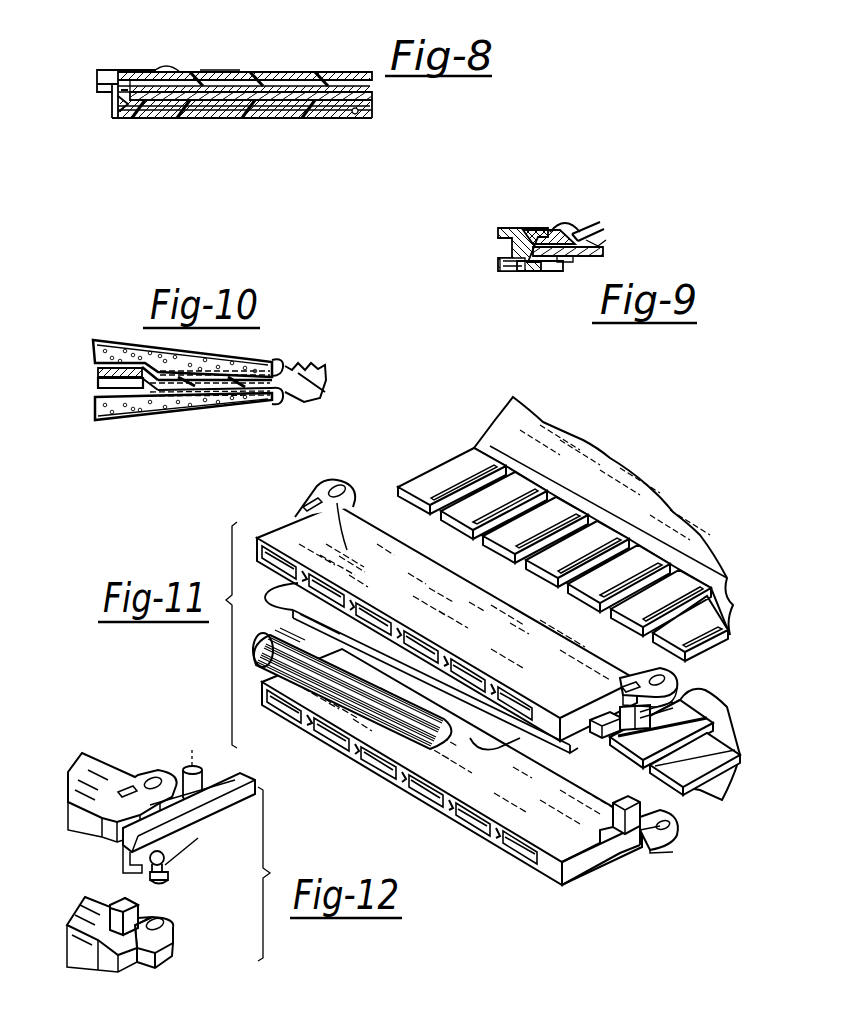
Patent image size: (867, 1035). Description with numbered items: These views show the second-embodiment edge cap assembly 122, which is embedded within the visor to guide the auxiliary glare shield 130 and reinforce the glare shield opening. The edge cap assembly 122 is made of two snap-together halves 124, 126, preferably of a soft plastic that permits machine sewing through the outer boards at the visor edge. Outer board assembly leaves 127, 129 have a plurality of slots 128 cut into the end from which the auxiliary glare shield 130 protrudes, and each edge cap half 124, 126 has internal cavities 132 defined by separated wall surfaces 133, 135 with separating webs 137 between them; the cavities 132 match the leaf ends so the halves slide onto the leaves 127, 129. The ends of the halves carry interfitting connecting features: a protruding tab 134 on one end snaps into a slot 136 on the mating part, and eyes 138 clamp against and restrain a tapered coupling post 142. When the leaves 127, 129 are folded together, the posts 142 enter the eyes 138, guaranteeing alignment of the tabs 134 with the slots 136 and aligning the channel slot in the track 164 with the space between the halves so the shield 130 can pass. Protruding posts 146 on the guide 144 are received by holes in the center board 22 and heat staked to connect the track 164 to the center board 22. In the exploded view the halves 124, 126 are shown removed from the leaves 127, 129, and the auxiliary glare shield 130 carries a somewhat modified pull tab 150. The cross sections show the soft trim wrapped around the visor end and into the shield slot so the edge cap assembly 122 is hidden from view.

In FIG. 9, the center board 22 is at (598, 225).
In FIG. 10, the center board 22 is at (98, 371).
In FIG. 11, the edge cap assembly 122 is at (230, 598).
In FIG. 8, the edge cap half 124 is at (282, 77).
In FIG. 9, the edge cap half 124 is at (537, 228).
In FIG. 10, the edge cap half 124 is at (270, 357).
In FIG. 11, the edge cap half 124 is at (294, 541).
In FIG. 8, the edge cap half 126 is at (323, 110).
In FIG. 9, the edge cap half 126 is at (548, 272).
In FIG. 10, the edge cap half 126 is at (260, 402).
In FIG. 11, the edge cap half 126 is at (310, 737).
In FIG. 8, the outer board assembly leaf 127 is at (333, 72).
In FIG. 10, the outer board assembly leaf 127 is at (93, 357).
In FIG. 11, the outer board assembly leaf 127 is at (510, 428).
In FIG. 11, the slots 128 is at (477, 480).
In FIG. 8, the outer board assembly leaf 129 is at (350, 110).
In FIG. 10, the outer board assembly leaf 129 is at (95, 400).
In FIG. 11, the outer board assembly leaf 129 is at (723, 783).
In FIG. 8, the auxiliary glare shield 130 is at (358, 97).
In FIG. 9, the auxiliary glare shield 130 is at (604, 251).
In FIG. 10, the auxiliary glare shield 130 is at (98, 383).
In FIG. 11, the auxiliary glare shield 130 is at (292, 593).
In FIG. 8, the internal cavities 132 is at (181, 112).
In FIG. 11, the internal cavities 132 is at (278, 574).
In FIG. 8, the wall surface 133 is at (238, 70).
In FIG. 11, the wall surface 133 is at (343, 480).
In FIG. 8, the protruding tab 134 is at (112, 100).
In FIG. 12, the protruding tab 134 is at (117, 832).
In FIG. 8, the wall surface 135 is at (262, 103).
In FIG. 11, the wall surface 135 is at (492, 696).
In FIG. 8, the slot 136 is at (120, 113).
In FIG. 12, the slot 136 is at (135, 905).
In FIG. 11, the separating webs 137 is at (392, 626).
In FIG. 9, the eyes 138 is at (520, 228).
In FIG. 12, the eyes 138 is at (150, 777).
In FIG. 9, the tapered coupling post 142 is at (517, 263).
In FIG. 12, the tapered coupling post 142 is at (185, 838).
In FIG. 9, the guide 144 is at (601, 242).
In FIG. 12, the guide 144 is at (170, 860).
In FIG. 9, the protruding posts 146 is at (568, 220).
In FIG. 12, the protruding posts 146 is at (200, 768).
In FIG. 11, the pull tab 150 is at (262, 653).
In FIG. 9, the track 164 is at (569, 259).
In FIG. 12, the track 164 is at (130, 864).